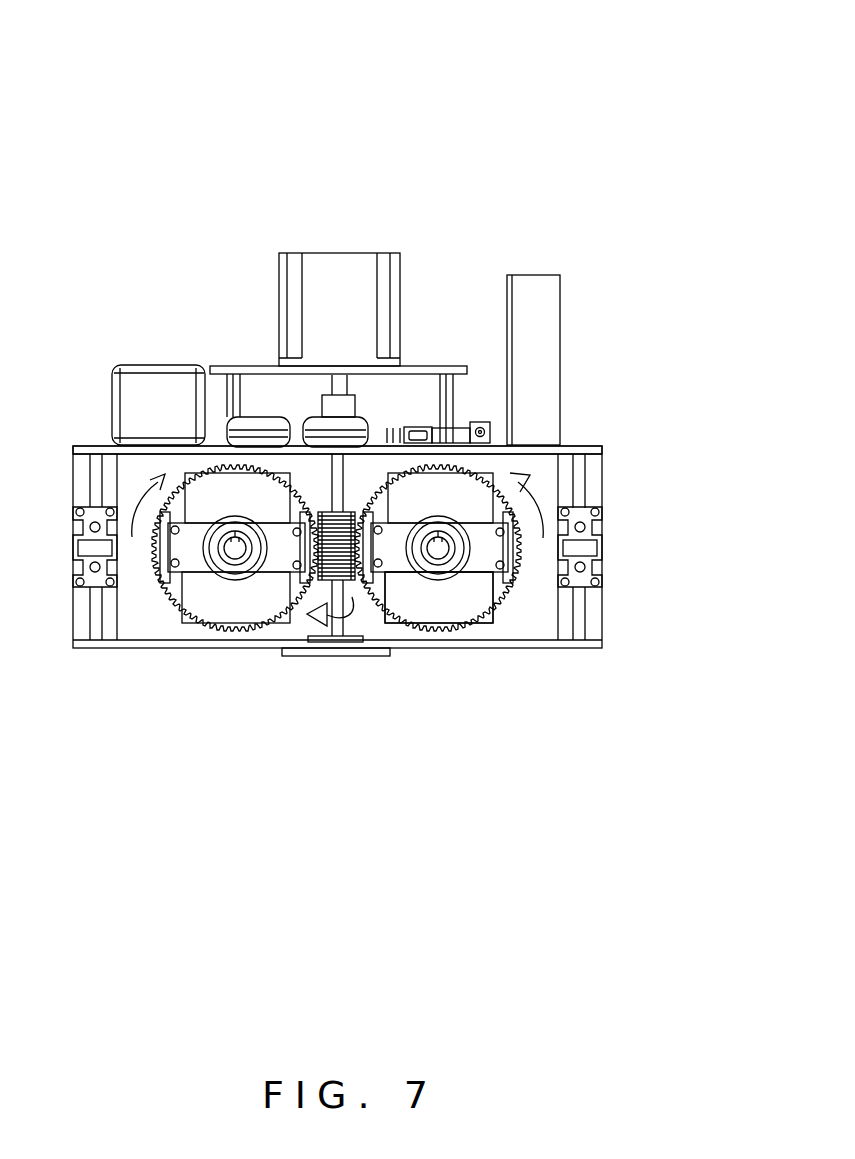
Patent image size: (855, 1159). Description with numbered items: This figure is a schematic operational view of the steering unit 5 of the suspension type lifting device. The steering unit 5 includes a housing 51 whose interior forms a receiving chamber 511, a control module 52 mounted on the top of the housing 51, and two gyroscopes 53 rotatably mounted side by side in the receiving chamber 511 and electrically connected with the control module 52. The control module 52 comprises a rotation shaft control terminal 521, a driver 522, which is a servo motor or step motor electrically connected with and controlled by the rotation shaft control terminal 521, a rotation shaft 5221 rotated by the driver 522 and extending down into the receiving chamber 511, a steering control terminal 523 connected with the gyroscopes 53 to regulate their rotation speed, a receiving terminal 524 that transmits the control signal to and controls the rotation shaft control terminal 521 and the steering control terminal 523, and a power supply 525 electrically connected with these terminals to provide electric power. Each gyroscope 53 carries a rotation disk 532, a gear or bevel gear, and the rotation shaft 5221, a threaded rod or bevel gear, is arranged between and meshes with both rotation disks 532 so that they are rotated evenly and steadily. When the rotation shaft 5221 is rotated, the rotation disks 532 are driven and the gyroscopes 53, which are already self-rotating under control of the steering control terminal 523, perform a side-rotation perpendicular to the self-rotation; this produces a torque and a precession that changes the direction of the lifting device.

The steering unit 5 is at (95, 90).
The housing 51 is at (560, 644).
The receiving chamber 511 is at (145, 630).
The control module 52 is at (565, 446).
The rotation shaft control terminal 521 is at (545, 286).
The driver 522 is at (342, 262).
The rotation shaft 5221 is at (293, 610).
The steering control terminal 523 is at (262, 423).
The receiving terminal 524 is at (472, 421).
The power supply 525 is at (118, 372).
The gyroscope 53 is at (527, 480).
The rotation disk 532 is at (448, 612).